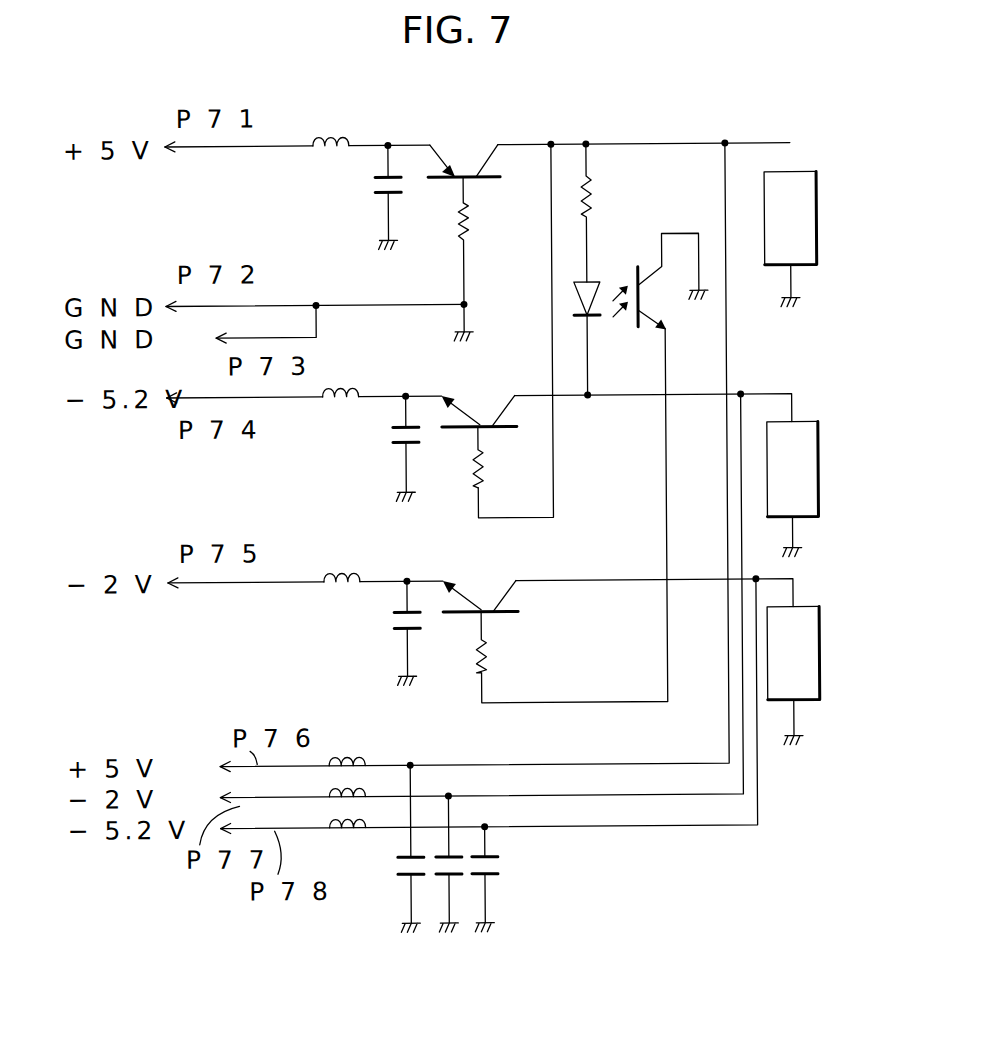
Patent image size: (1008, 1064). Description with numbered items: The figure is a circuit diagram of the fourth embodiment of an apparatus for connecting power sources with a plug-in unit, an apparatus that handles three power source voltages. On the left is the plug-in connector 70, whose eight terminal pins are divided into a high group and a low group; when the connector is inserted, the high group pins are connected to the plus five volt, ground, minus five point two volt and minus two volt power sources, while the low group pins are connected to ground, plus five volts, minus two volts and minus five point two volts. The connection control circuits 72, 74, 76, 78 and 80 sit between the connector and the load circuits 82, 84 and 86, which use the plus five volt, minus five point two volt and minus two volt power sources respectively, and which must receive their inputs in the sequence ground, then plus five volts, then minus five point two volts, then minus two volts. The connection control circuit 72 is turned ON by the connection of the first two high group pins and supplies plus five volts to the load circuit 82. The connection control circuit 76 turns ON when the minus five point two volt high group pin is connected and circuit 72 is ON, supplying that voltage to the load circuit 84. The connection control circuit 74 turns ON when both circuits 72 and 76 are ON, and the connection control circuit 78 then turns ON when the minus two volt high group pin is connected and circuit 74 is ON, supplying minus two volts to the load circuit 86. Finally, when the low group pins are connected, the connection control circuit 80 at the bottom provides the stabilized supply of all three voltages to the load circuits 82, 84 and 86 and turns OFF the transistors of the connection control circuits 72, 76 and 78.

The plug-in connector 70 is at (152, 113).
The connection control circuit 72 is at (473, 145).
The connection control circuit 74 is at (634, 243).
The connection control circuit 76 is at (478, 394).
The connection control circuit 78 is at (487, 580).
The connection control circuit 80 is at (427, 763).
The load circuit 82 is at (819, 205).
The load circuit 84 is at (819, 457).
The load circuit 86 is at (819, 667).